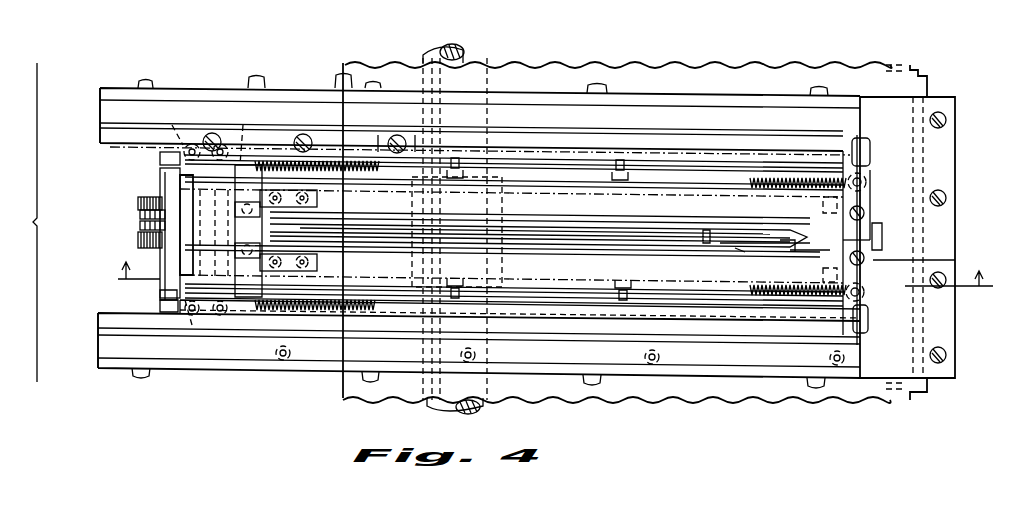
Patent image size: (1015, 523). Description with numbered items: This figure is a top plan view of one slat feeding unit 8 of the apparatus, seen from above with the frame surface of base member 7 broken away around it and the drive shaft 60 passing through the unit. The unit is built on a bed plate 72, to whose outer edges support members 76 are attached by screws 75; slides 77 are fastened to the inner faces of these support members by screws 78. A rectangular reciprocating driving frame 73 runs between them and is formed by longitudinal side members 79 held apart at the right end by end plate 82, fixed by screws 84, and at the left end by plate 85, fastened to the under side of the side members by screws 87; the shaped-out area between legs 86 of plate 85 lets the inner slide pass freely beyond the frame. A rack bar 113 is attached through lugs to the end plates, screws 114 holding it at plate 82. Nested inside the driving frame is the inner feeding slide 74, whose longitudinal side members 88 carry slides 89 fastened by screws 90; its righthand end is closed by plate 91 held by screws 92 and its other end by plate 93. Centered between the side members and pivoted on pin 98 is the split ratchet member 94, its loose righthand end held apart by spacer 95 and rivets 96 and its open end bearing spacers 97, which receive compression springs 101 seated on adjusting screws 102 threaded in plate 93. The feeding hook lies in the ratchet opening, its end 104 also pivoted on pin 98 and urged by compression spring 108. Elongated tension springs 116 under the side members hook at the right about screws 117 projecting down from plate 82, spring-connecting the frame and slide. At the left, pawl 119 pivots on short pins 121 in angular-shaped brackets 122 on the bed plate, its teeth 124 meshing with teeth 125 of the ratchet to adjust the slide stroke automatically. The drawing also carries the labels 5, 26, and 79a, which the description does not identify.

The section line 5- 5 is at (549, 273).
The base member 7 is at (708, 64).
The slat feeding unit 8 is at (22, 222).
The upper guide bar 26 is at (218, 88).
The shaft 60 is at (473, 52).
The bed plate 72 is at (884, 98).
The reciprocating driving frame 73 is at (725, 146).
The inner feeding slide 74 is at (680, 200).
The screws 75 is at (283, 362).
The support members 76 is at (638, 106).
The slides 77 is at (106, 136).
The screws 78 is at (145, 80).
The longitudinal side members 79 is at (666, 146).
The rail screw 79a is at (378, 136).
The end plate 82 is at (868, 184).
The screws 84 is at (856, 140).
The plate 85 is at (178, 303).
The legs 86 is at (192, 143).
The screws 87 is at (172, 233).
The longitudinal side members 88 is at (550, 174).
The slides 89 is at (597, 170).
The screws 90 is at (452, 186).
The plate 91 is at (820, 244).
The screws 92 is at (822, 207).
The plate 93 is at (163, 181).
The split ratchet member 94 is at (548, 223).
The spacer 95 is at (746, 232).
The rivets 96 is at (742, 252).
The spacers 97 is at (197, 192).
The pin 98 is at (160, 293).
The compression springs 101 is at (175, 186).
The adjusting screws 102 is at (137, 202).
The opposite end of feeding hook 104 is at (140, 214).
The compression spring 108 is at (185, 225).
The rack bar 113 is at (795, 244).
The screws 114 is at (870, 225).
The elongated tension springs 116 is at (773, 178).
The screws 117 is at (870, 176).
The pawl 119 is at (375, 222).
The short pins 121 is at (244, 201).
The angular-shaped brackets 122 is at (318, 200).
The teeth 124 is at (398, 250).
The teeth 125 is at (594, 226).